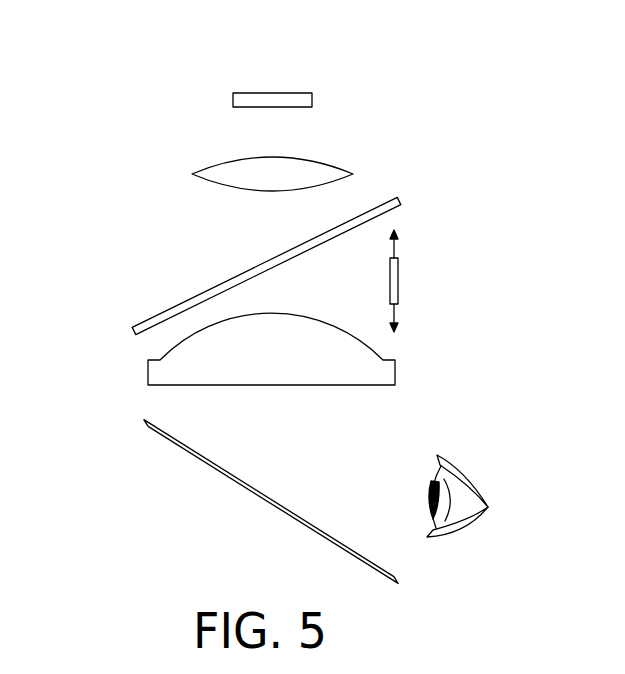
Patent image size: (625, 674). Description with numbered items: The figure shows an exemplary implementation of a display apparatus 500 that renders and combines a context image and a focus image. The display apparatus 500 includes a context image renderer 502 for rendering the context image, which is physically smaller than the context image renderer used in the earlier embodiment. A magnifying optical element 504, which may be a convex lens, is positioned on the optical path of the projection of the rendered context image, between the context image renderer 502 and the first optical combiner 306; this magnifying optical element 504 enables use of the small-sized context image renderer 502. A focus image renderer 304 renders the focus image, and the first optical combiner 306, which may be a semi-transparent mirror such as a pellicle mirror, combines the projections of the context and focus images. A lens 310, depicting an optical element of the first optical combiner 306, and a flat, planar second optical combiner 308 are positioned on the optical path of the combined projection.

The display apparatus 500 is at (527, 65).
The context image renderer 502 is at (312, 95).
The magnifying optical element 504 is at (353, 174).
The first optical combiner 306 is at (143, 322).
The focus image renderer 304 is at (398, 283).
The lens 310 is at (395, 373).
The second optical combiner 308 is at (145, 420).